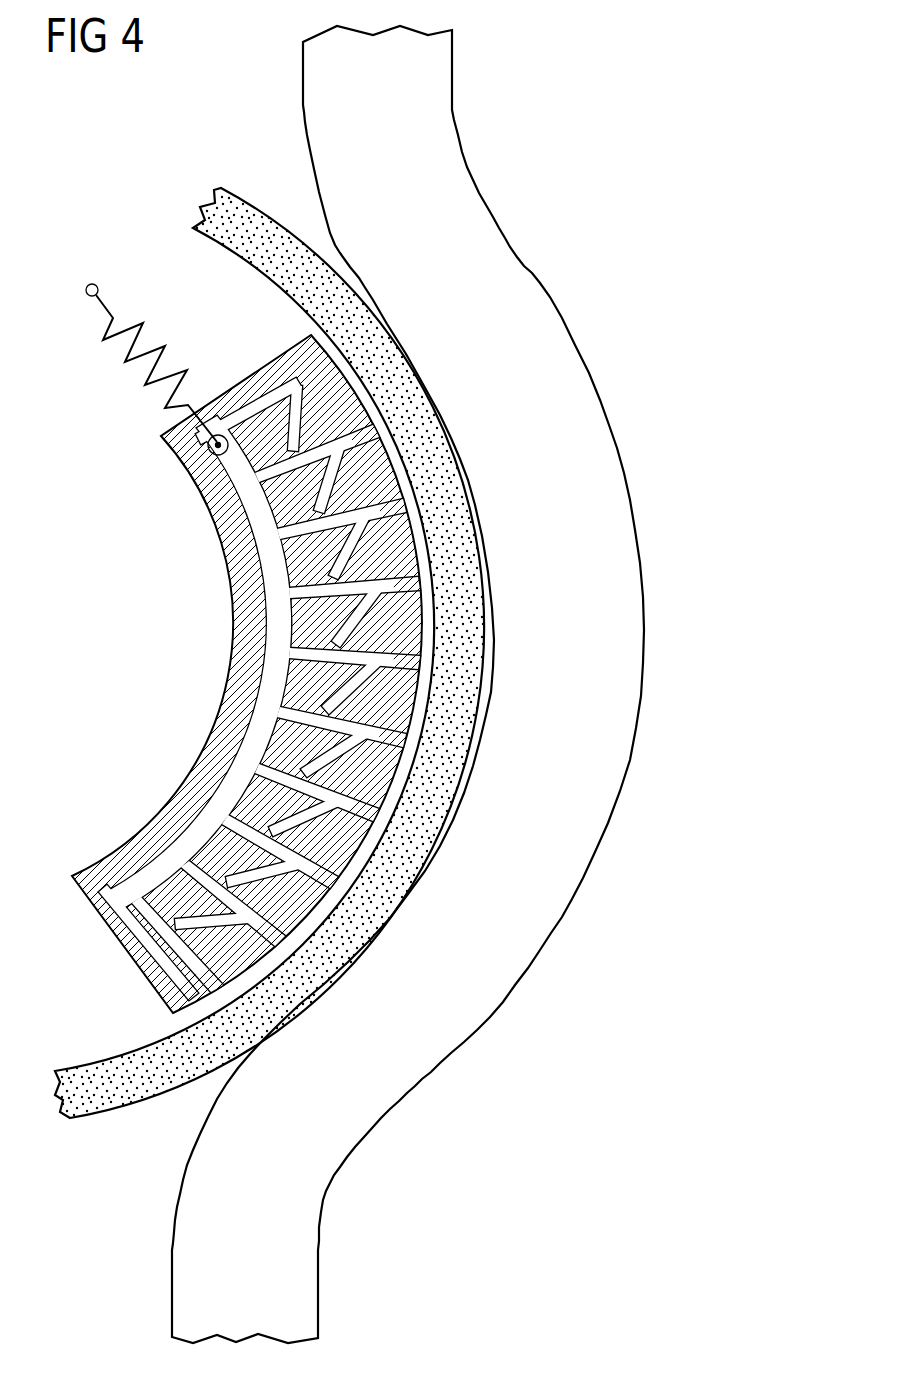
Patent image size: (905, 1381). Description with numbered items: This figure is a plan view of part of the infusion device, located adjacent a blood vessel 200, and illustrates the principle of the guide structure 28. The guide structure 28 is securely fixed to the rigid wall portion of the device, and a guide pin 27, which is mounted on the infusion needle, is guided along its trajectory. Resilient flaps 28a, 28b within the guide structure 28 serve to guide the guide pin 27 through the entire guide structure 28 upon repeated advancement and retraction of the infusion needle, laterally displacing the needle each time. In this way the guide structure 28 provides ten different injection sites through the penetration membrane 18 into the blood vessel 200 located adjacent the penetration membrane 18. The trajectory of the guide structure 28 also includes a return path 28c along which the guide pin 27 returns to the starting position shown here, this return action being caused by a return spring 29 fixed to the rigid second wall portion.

The blood vessel 200 is at (450, 174).
The penetration membrane 18 is at (236, 243).
The guide pin 27 is at (183, 468).
The guide structure 28 is at (247, 674).
The resilient flap 28a is at (293, 392).
The resilient flap 28b is at (228, 482).
The return path 28c is at (214, 811).
The return spring 29 is at (127, 348).